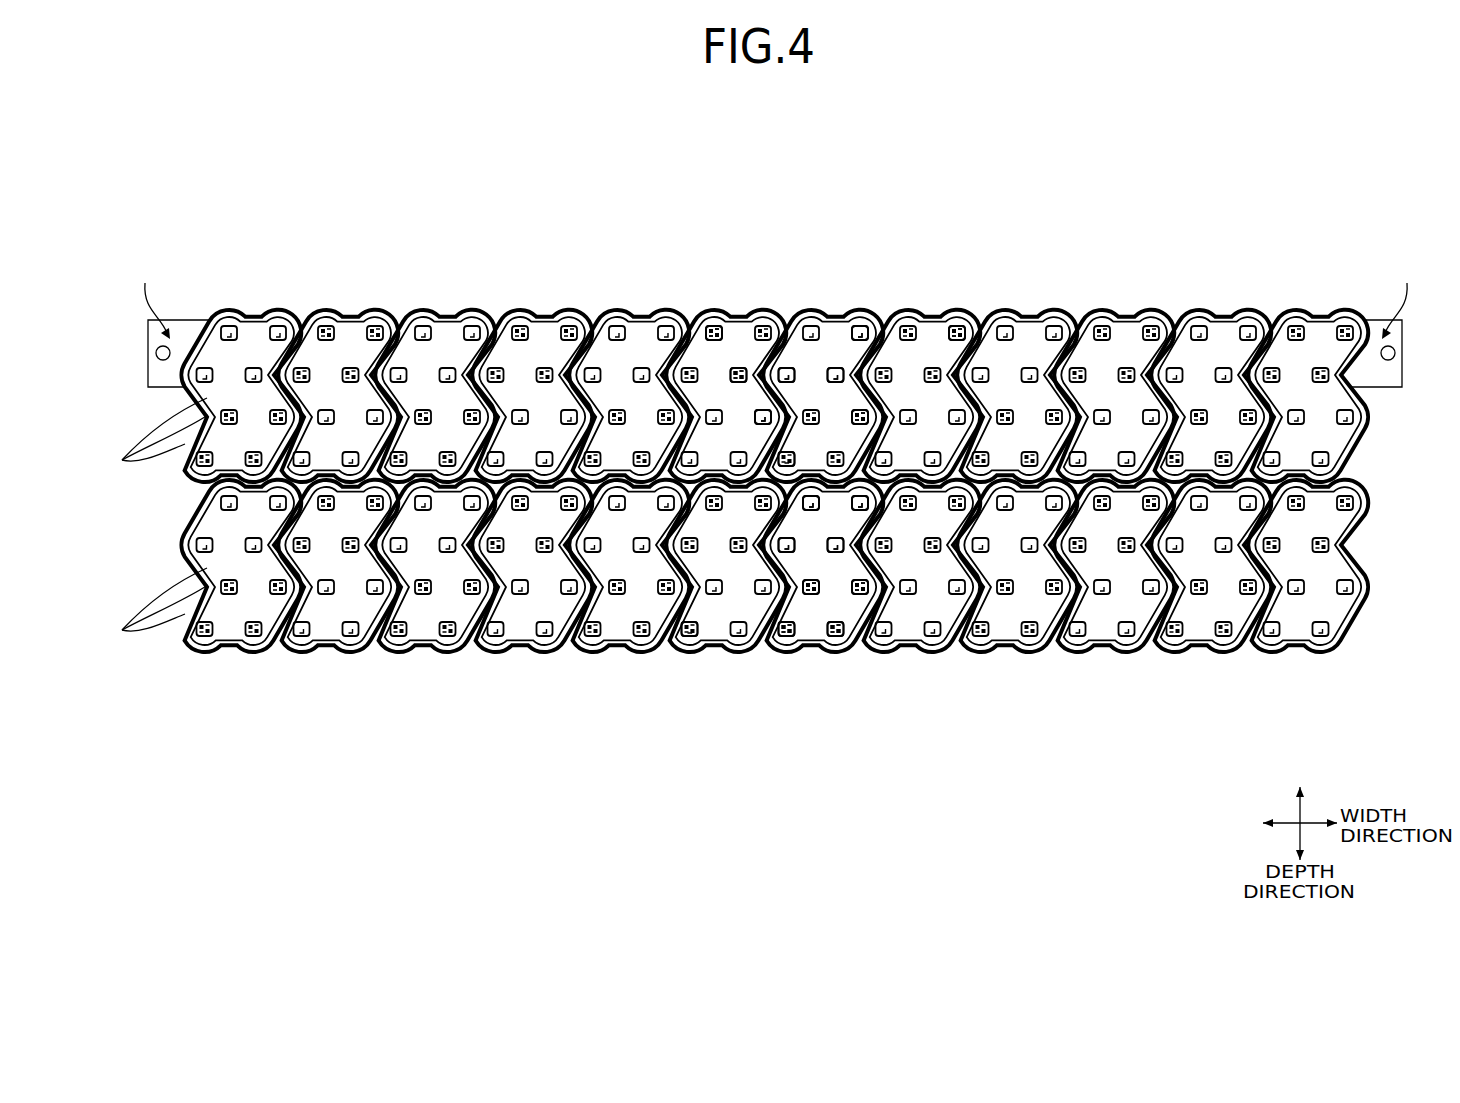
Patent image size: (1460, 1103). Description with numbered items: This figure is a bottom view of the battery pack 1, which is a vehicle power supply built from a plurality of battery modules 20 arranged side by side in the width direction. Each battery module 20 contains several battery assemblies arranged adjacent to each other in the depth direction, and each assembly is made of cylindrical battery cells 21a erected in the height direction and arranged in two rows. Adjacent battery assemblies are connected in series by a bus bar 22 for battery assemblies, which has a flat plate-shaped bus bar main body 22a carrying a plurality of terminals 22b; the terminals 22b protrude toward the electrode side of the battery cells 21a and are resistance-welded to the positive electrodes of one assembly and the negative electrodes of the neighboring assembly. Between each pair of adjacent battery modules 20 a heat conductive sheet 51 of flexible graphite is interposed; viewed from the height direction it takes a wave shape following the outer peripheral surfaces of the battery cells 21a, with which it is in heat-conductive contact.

The battery pack 1 is at (614, 198).
The battery module 20 is at (1055, 655).
The battery cell 21a is at (145, 521).
The bus bar for battery assemblies 22 is at (850, 400).
The bus bar main body 22a is at (960, 325).
The terminal 22b is at (784, 452).
The heat conductive sheet 51 is at (290, 317).